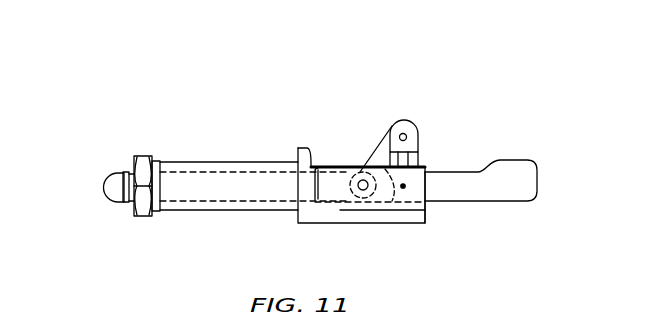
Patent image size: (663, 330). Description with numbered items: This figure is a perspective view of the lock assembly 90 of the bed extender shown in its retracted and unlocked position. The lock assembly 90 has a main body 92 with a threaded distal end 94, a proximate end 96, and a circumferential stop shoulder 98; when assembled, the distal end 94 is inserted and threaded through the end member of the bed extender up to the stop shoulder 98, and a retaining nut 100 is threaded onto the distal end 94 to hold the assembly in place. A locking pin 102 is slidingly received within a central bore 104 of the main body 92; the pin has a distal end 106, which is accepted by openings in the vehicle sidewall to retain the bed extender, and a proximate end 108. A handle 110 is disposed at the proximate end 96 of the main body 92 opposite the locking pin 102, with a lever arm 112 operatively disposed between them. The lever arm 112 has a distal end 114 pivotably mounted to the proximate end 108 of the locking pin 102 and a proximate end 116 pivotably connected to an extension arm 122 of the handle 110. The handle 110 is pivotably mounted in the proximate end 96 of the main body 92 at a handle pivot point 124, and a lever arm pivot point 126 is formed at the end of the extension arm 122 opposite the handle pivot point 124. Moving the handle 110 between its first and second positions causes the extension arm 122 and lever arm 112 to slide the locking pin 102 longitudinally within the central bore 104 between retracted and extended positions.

The lock assembly 90 is at (238, 96).
The main body 92 is at (414, 228).
The distal end 94 is at (135, 162).
The proximate end 96 is at (428, 218).
The circumferential stop shoulder 98 is at (297, 148).
The retaining nut 100 is at (144, 218).
The locking pin 102 is at (113, 203).
The central bore 104 is at (223, 203).
The distal end 106 is at (108, 184).
The proximate end 108 is at (333, 165).
The handle 110 is at (500, 160).
The lever arm 112 is at (366, 135).
The distal end 114 is at (377, 205).
The proximate end 116 is at (397, 121).
The extension arm 122 is at (422, 166).
The handle pivot point 124 is at (405, 185).
The lever arm pivot point 126 is at (423, 140).